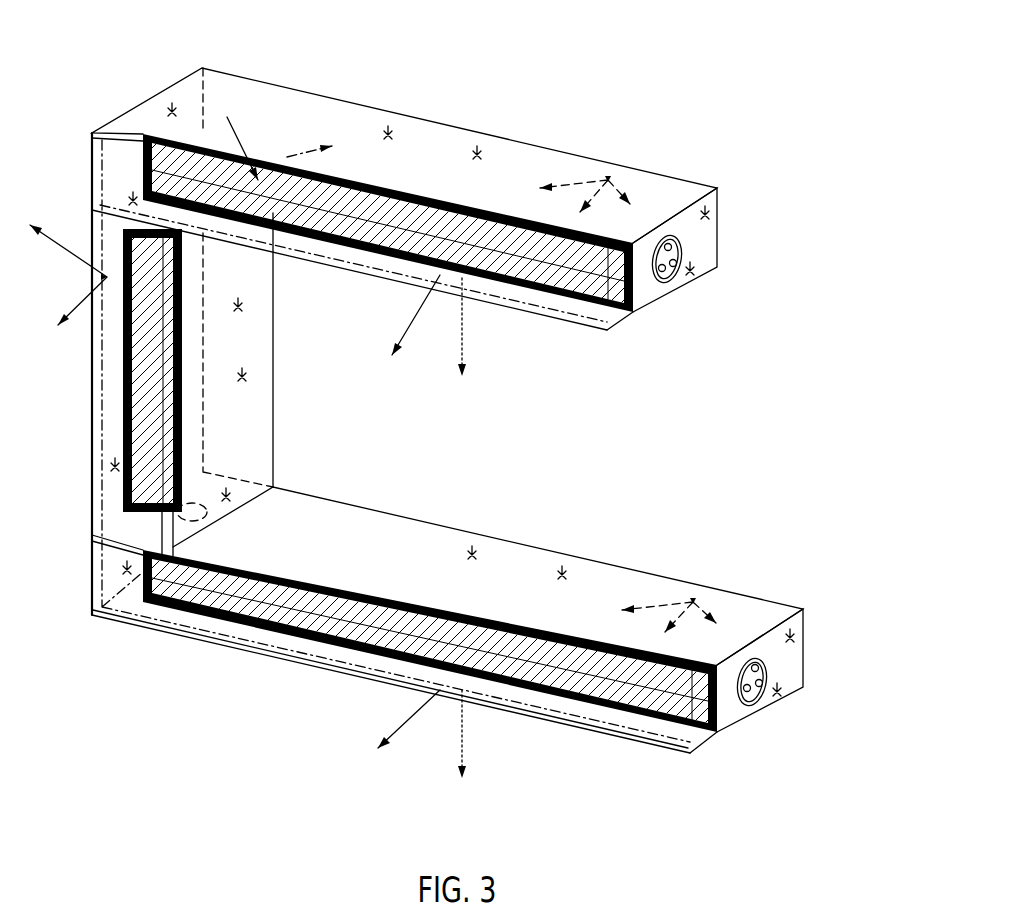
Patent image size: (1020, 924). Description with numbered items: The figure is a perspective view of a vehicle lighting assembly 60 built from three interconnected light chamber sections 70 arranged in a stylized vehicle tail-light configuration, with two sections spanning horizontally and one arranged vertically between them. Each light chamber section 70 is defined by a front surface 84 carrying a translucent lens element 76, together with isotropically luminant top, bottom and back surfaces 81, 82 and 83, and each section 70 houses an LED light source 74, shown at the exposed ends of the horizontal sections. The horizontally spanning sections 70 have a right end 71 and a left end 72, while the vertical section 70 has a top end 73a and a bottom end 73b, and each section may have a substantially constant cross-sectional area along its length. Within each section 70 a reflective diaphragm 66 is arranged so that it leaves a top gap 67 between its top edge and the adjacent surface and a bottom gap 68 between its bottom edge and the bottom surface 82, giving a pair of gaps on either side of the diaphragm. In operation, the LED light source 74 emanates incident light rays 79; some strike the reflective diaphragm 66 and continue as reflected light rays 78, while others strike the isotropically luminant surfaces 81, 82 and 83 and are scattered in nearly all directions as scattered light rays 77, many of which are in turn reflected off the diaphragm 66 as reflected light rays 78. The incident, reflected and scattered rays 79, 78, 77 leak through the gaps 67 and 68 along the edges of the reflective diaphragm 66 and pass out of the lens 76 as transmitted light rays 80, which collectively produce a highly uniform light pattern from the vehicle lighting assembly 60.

The vehicle lighting assembly 60 is at (435, 411).
The reflective diaphragm 66 is at (520, 283).
The top gap 67 is at (648, 247).
The bottom gap 68 is at (640, 318).
The light chamber section 70 is at (238, 58).
The right end 71 is at (708, 214).
The left end 72 is at (168, 111).
The top end 73a is at (131, 199).
The bottom end 73b is at (229, 495).
The LED light source 74 is at (672, 247).
The translucent lens element 76 is at (632, 316).
The scattered light rays 77 is at (566, 186).
The reflected light rays 78 is at (312, 140).
The incident light rays 79 is at (640, 215).
The transmitted light rays 80 is at (457, 332).
The top surface 81 is at (391, 132).
The bottom surface 82 is at (692, 273).
The back surface 83 is at (478, 152).
The front surface 84 is at (372, 256).